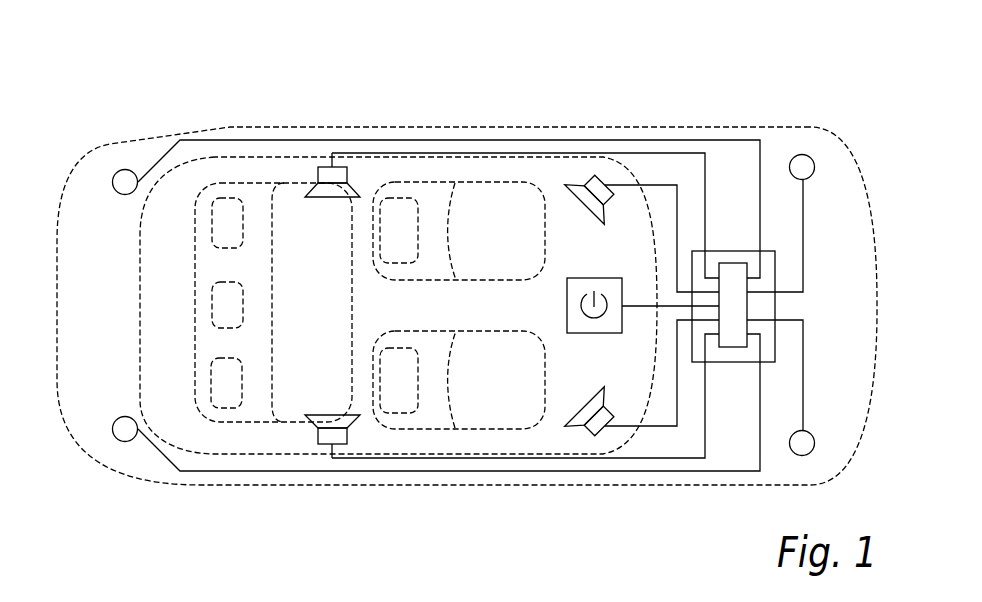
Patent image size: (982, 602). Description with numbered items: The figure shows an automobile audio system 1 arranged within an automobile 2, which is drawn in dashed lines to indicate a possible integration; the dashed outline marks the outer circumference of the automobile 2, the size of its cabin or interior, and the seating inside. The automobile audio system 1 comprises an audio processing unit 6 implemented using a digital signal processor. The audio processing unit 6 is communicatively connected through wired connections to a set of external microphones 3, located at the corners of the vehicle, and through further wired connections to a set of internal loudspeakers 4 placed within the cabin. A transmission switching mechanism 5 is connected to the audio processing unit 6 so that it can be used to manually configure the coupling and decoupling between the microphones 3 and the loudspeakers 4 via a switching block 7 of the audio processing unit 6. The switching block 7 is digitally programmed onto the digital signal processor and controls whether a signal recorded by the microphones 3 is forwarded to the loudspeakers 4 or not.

The automobile audio system 1 is at (824, 65).
The automobile 2 is at (218, 127).
The external microphones 3 is at (108, 182).
The internal loudspeakers 4 is at (322, 200).
The transmission switching mechanism 5 is at (567, 313).
The audio processing unit 6 is at (732, 262).
The switching block 7 is at (730, 347).